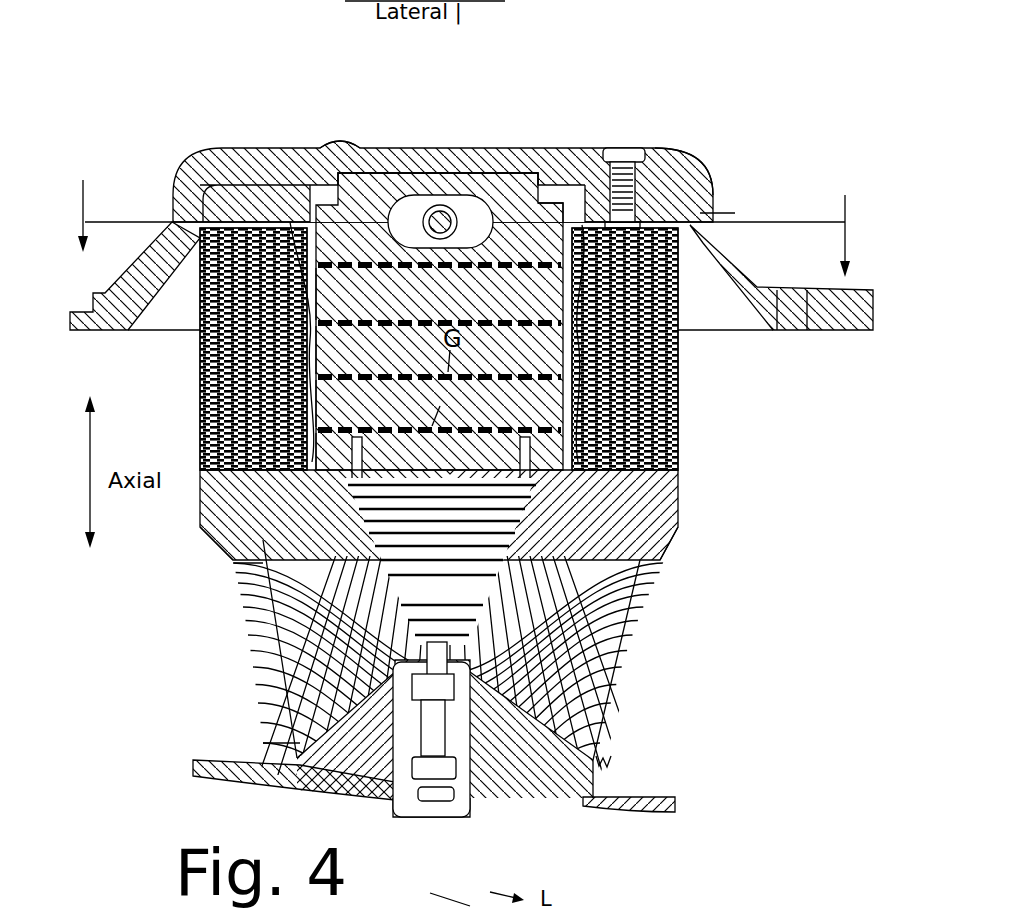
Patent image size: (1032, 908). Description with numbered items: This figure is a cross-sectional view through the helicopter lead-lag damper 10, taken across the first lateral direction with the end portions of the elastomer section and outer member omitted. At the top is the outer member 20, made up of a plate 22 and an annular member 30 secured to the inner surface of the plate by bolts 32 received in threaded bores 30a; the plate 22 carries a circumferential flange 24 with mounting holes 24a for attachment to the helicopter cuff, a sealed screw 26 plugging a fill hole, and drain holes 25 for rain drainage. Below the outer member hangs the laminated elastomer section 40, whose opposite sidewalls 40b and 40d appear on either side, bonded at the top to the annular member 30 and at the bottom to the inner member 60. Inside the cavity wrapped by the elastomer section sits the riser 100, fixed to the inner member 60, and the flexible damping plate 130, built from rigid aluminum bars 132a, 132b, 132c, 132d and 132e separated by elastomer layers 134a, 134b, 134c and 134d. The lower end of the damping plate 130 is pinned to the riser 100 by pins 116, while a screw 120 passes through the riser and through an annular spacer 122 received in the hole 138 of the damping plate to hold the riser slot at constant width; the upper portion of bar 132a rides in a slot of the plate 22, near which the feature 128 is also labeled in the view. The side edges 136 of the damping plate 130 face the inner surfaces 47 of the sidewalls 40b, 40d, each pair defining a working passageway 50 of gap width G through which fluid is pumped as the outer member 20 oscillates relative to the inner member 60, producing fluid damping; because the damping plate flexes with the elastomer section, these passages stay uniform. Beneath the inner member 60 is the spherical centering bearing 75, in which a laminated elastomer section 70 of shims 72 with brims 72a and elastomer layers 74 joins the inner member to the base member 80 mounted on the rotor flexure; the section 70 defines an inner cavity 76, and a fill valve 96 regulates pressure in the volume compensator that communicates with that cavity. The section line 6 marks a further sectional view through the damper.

The section line 6- 6 is at (474, 211).
The damper 10 is at (662, 85).
The outer member 20 is at (237, 145).
The plate 22 is at (213, 165).
The circumferential flange 24 is at (848, 320).
The mounting holes 24a is at (792, 328).
The drain holes 25 is at (167, 238).
The sealed screw 26 is at (340, 142).
The annular member 30 is at (712, 175).
The threaded bores 30a is at (739, 209).
The bolts 32 is at (645, 150).
The elastomer section 40 is at (692, 434).
The elastomer section sidewall 40b is at (680, 375).
The elastomer section sidewall 40d is at (200, 378).
The inner surfaces 47 is at (235, 488).
The working passageways 50 is at (445, 403).
The inner member 60 is at (668, 522).
The elastomer section 70 is at (645, 697).
The shims 72 is at (622, 748).
The brims 72a is at (606, 772).
The elastomer layers 74 is at (622, 733).
The spherical centering bearing 75 is at (660, 662).
The inner cavity 76 is at (440, 561).
The base member 80 is at (545, 792).
The fill valve 96 is at (412, 792).
The riser 100 is at (682, 487).
The pins 116 is at (252, 492).
The screw 120 is at (512, 180).
The annular spacer 122 is at (418, 197).
The stack step 128 is at (545, 195).
The flexible damping plate 130 is at (505, 178).
The rigid bar 132a is at (439, 230).
The rigid bar 132b is at (355, 294).
The rigid bar 132c is at (354, 350).
The rigid bar 132d is at (357, 403).
The rigid bar 132e is at (394, 451).
The elastomer layer 134a is at (488, 262).
The elastomer layer 134b is at (482, 320).
The elastomer layer 134c is at (486, 375).
The elastomer layer 134d is at (488, 428).
The side edges 136 is at (290, 222).
The hole 138 is at (445, 212).